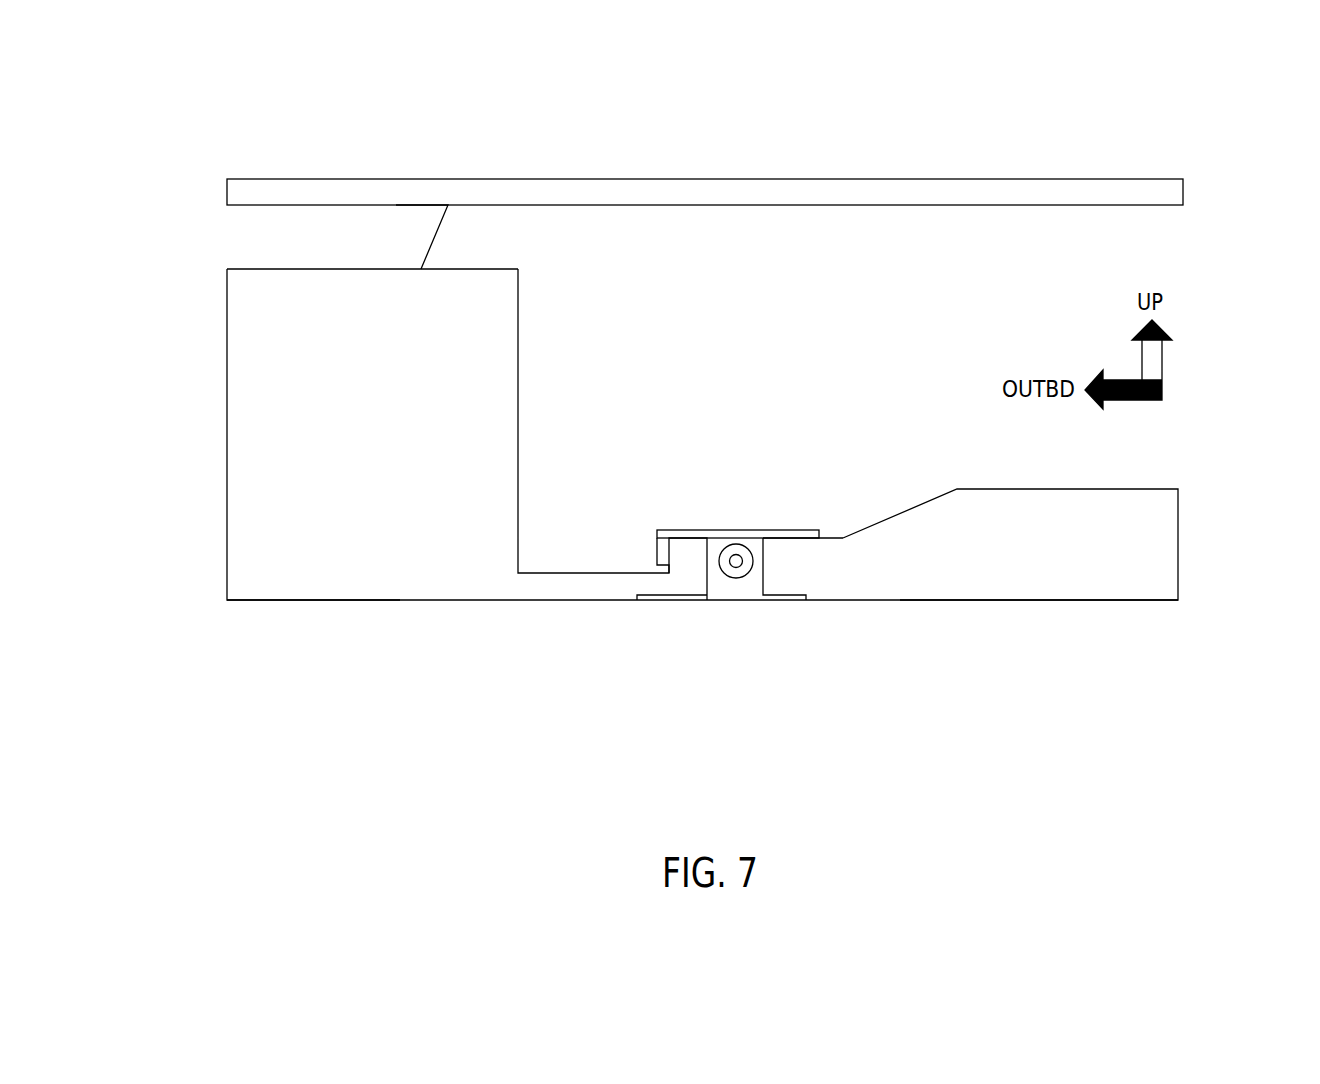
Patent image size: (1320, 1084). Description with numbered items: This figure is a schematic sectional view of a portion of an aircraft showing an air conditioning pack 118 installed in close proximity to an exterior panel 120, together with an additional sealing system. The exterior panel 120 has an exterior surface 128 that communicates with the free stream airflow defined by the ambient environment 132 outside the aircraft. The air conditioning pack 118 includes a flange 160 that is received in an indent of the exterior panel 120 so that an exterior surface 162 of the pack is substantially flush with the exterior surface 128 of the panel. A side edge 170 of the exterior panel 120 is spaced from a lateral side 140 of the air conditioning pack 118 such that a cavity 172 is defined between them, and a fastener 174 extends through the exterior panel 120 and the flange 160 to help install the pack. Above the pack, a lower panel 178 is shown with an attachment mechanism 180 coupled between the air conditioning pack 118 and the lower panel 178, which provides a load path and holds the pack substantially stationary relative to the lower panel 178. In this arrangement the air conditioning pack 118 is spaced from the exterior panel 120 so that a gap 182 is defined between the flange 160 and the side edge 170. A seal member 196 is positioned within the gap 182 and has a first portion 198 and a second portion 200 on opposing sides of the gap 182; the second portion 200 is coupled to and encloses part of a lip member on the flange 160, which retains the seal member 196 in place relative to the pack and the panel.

The air conditioning pack 118 is at (227, 402).
The exterior panel 120 is at (1178, 533).
The exterior surface 128 is at (1025, 601).
The ambient environment 132 is at (701, 768).
The lateral side 140 is at (520, 322).
The flange 160 is at (583, 601).
The exterior surface 162 is at (310, 601).
The side edge 170 is at (757, 543).
The cavity 172 is at (804, 443).
The fastener 174 is at (683, 552).
The lower panel 178 is at (922, 180).
The attachment mechanism 180 is at (437, 232).
The gap 182 is at (749, 613).
The seal member 196 is at (807, 528).
The first portion 198 is at (674, 601).
The second portion 200 is at (662, 530).